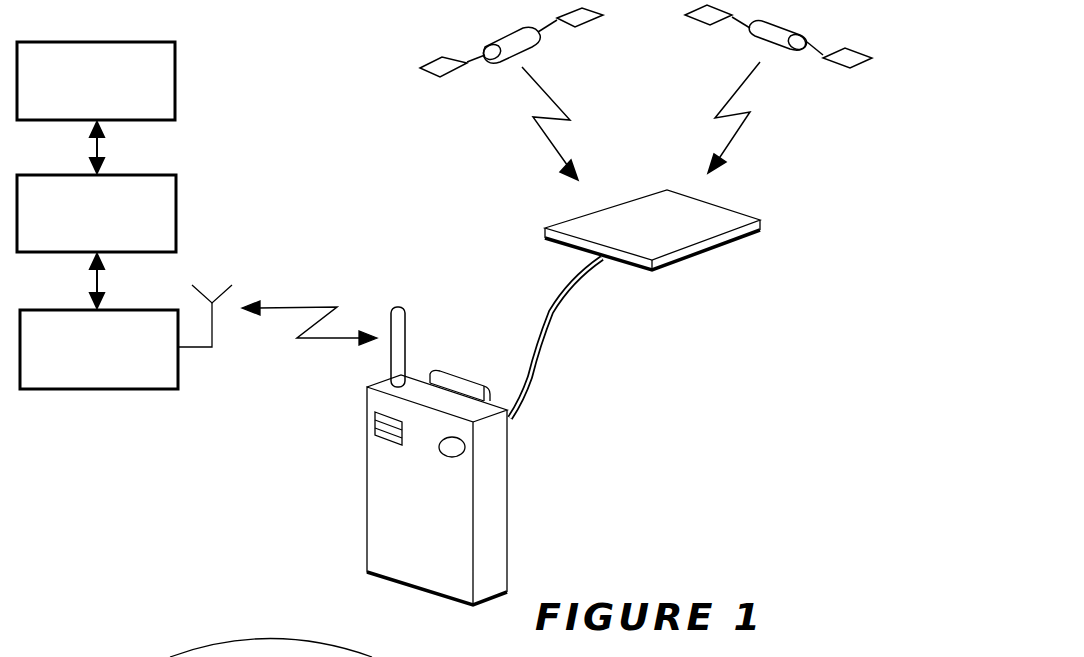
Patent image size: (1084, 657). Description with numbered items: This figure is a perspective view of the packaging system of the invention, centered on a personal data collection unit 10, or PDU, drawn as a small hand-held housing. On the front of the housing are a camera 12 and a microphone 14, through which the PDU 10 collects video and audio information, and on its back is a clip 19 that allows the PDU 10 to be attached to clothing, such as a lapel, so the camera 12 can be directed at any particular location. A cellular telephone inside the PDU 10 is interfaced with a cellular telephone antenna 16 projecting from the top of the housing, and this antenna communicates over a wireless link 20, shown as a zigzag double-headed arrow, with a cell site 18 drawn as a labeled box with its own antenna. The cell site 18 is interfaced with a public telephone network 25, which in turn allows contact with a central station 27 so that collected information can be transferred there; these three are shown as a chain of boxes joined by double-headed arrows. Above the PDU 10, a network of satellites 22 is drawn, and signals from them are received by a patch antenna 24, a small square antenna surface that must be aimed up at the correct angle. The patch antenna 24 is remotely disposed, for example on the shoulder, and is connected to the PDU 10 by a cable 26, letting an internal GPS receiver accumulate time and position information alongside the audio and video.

The personal data collection unit 10 is at (488, 538).
The camera 12 is at (450, 450).
The microphone 14 is at (383, 430).
The cellular telephone antenna 16 is at (407, 350).
The cell site 18 is at (97, 390).
The clip 19 is at (462, 380).
The wireless link 20 is at (290, 303).
The satellites 22 is at (765, 35).
The patch antenna 24 is at (637, 222).
The public telephone network 25 is at (176, 213).
The cable 26 is at (553, 322).
The central station 27 is at (175, 80).